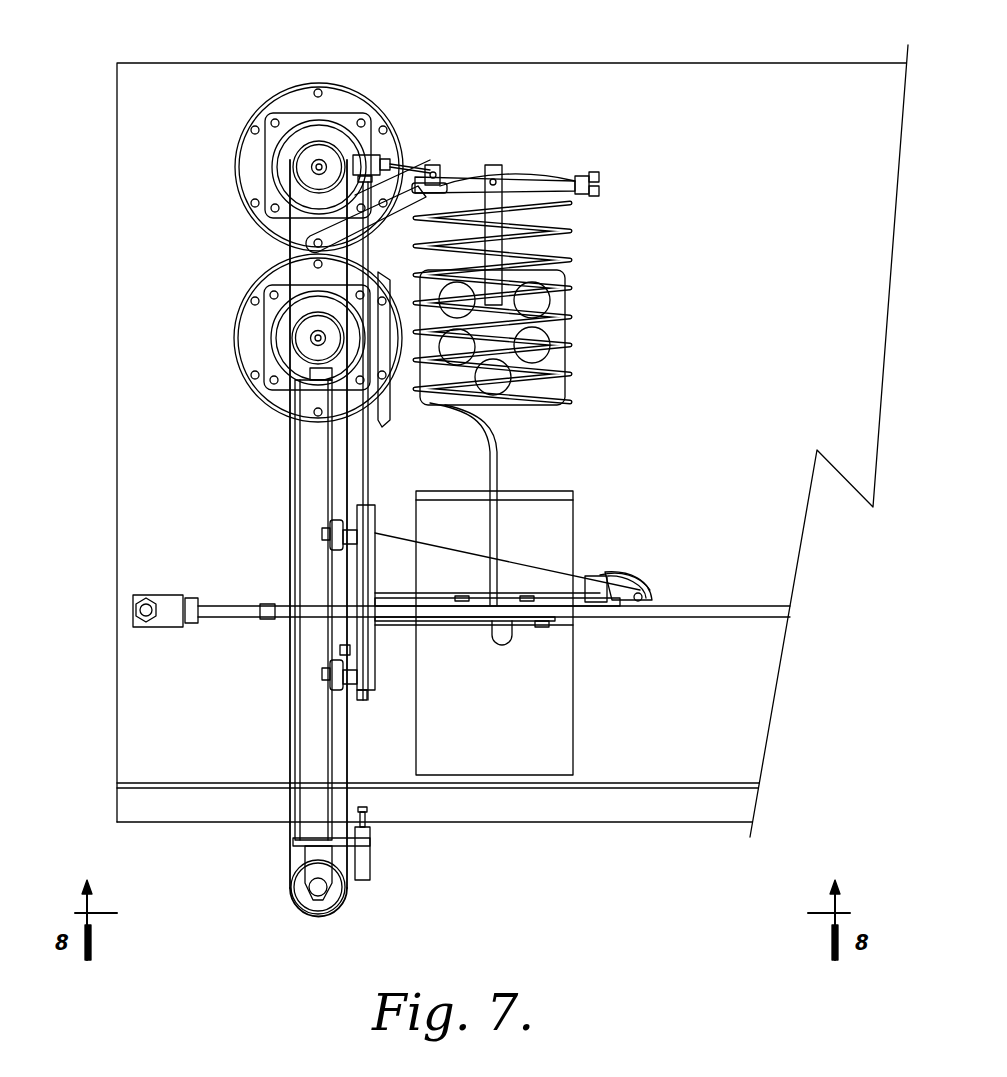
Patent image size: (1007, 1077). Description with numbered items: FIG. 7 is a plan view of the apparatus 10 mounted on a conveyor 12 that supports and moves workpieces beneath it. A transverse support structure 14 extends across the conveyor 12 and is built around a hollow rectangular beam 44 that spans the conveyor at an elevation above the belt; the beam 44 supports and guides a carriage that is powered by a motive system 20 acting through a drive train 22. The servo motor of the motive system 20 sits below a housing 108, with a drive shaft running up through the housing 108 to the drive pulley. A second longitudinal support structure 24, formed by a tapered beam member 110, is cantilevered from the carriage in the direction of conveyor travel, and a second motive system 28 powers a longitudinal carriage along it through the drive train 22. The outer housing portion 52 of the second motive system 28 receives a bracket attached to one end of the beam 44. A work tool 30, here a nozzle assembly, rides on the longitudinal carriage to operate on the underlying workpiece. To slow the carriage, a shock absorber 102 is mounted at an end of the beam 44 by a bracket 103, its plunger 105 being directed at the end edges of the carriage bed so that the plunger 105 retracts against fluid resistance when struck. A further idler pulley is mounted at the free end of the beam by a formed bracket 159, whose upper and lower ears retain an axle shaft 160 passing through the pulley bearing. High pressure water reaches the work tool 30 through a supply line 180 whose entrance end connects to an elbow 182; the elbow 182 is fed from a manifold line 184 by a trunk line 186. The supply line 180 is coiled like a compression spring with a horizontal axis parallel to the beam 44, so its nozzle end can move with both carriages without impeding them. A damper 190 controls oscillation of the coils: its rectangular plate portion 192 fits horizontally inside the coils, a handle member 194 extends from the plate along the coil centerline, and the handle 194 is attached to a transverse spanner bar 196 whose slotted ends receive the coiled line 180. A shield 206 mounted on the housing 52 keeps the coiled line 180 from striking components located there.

The apparatus 10 is at (176, 114).
The conveyor 12 is at (692, 850).
The support structure 14 is at (268, 440).
The motive system 20 is at (228, 165).
The drive train 22 is at (243, 238).
The longitudinal support structure 24 is at (550, 530).
The second motive system 28 is at (234, 300).
The work tool 30 is at (597, 625).
The beam structure 44 is at (300, 770).
The outer housing portion 52 is at (290, 100).
The shock absorber 102 is at (362, 882).
The bracket 103 is at (364, 850).
The plunger 105 is at (368, 822).
The housing 108 is at (240, 110).
The beam member 110 is at (516, 550).
The formed bracket 159 is at (641, 585).
The axle shaft 160 is at (644, 598).
The supply line 180 is at (578, 206).
The elbow 182 is at (366, 154).
The manifold line 184 is at (788, 612).
The trunk line 186 is at (366, 460).
The damper 190 is at (598, 356).
The plate portion 192 is at (570, 322).
The handle member 194 is at (572, 190).
The spanner bar 196 is at (507, 176).
The shield 206 is at (382, 275).